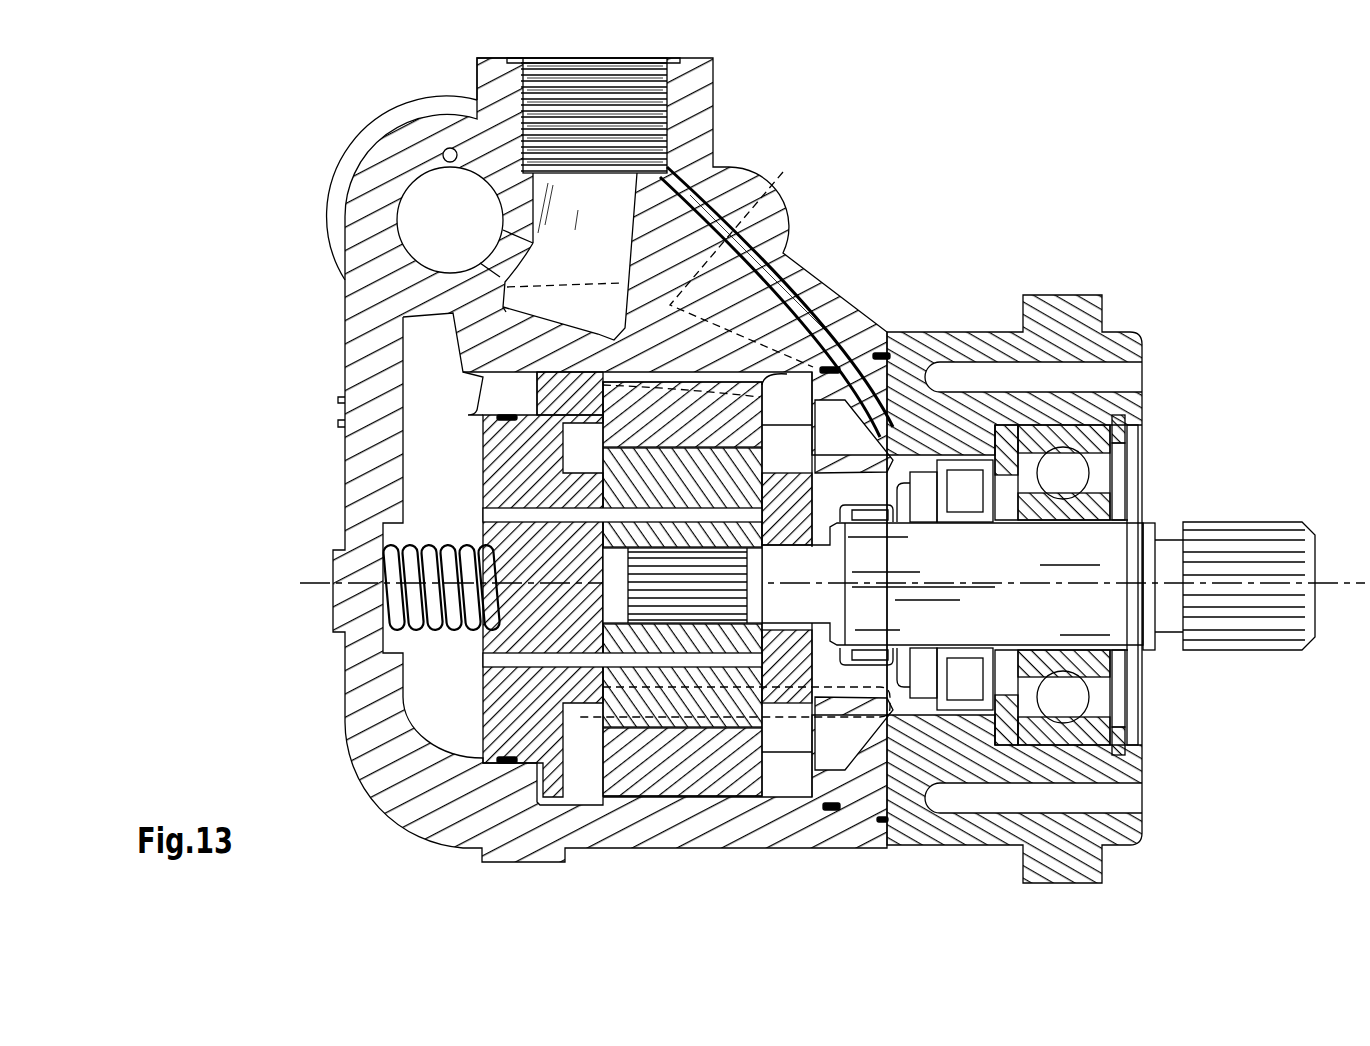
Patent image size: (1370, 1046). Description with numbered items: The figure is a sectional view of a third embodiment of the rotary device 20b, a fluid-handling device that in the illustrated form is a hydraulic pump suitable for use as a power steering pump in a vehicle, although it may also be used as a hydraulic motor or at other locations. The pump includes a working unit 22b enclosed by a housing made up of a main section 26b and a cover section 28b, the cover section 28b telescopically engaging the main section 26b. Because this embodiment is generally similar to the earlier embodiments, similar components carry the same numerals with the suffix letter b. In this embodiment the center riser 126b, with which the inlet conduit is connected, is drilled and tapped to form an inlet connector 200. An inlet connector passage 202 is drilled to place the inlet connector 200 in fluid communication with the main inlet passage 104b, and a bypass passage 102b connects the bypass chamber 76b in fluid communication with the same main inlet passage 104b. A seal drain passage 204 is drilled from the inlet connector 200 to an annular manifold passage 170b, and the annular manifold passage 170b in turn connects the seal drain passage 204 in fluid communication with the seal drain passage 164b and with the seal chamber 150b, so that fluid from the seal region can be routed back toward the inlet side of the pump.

The rotary device 20b is at (968, 187).
The working unit 22b is at (597, 797).
The main section 26b is at (330, 538).
The cover section 28b is at (1098, 293).
The bypass chamber 76b is at (427, 193).
The bypass passage 102b is at (497, 268).
The main inlet passage 104b is at (792, 163).
The center riser 126b is at (520, 97).
The seal chamber 150b is at (921, 507).
The seal drain passage 164b is at (912, 457).
The annular manifold passage 170b is at (857, 370).
The inlet connector 200 is at (613, 85).
The inlet connector passage 202 is at (473, 117).
The seal drain passage 204 is at (773, 283).